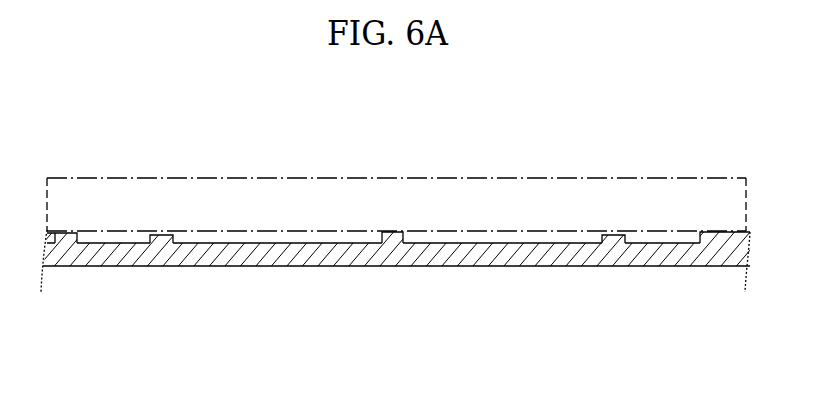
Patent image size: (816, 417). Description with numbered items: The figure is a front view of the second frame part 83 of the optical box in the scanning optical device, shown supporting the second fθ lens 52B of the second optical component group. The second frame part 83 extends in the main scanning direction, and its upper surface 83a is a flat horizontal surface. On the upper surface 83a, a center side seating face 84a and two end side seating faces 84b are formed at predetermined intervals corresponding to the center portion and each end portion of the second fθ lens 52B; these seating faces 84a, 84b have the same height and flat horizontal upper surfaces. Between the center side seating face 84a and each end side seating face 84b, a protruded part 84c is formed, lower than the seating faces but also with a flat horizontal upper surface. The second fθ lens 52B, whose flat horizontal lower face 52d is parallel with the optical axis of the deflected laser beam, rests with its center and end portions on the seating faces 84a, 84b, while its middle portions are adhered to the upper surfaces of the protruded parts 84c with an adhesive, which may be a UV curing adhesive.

The second fθ lens 52B is at (290, 188).
The lower face 52d is at (484, 242).
The second frame part 83 is at (217, 255).
The upper surface 83a is at (317, 242).
The center side seating face 84a is at (397, 232).
The end side seating face 84b is at (73, 233).
The protruded part 84c is at (158, 236).